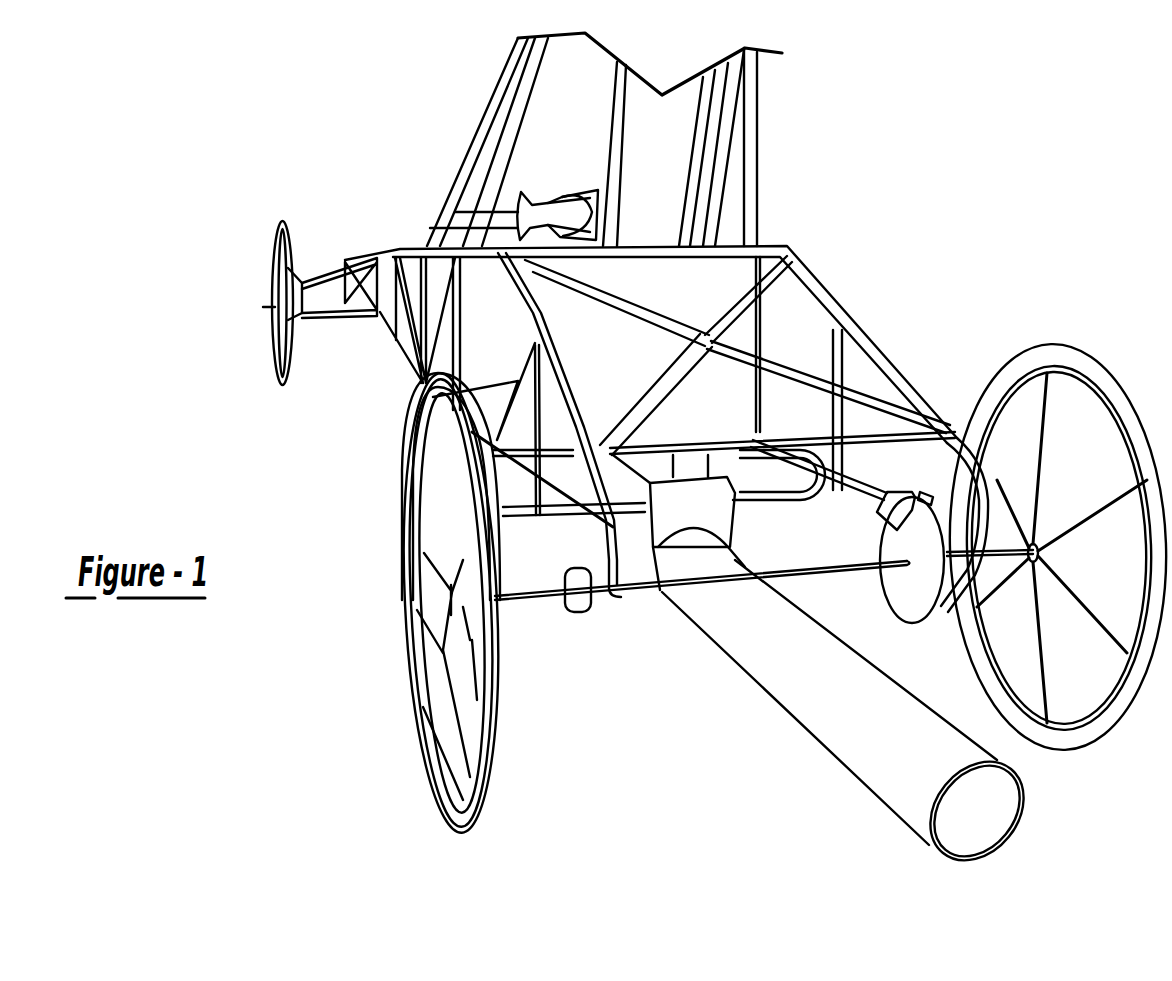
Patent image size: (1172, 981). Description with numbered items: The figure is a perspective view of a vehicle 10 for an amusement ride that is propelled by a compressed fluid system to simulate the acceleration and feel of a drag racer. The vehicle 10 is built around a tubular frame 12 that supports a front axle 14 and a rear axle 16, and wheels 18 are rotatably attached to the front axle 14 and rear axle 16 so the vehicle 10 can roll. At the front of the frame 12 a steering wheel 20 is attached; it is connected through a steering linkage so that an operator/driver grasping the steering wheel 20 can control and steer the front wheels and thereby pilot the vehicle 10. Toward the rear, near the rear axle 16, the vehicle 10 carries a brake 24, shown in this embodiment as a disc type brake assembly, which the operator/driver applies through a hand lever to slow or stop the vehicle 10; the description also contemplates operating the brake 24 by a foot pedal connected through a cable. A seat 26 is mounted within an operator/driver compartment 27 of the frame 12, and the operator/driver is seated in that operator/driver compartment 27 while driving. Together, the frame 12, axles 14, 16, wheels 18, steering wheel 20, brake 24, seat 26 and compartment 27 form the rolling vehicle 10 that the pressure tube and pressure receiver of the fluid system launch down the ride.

The vehicle 10 is at (379, 386).
The frame 12 is at (372, 350).
The front axle 14 is at (328, 278).
The rear axle 16 is at (643, 587).
The wheels 18 is at (280, 238).
The steering wheel 20 is at (518, 207).
The brake 24 is at (920, 597).
The seat 26 is at (400, 593).
The operator/driver compartment 27 is at (509, 378).